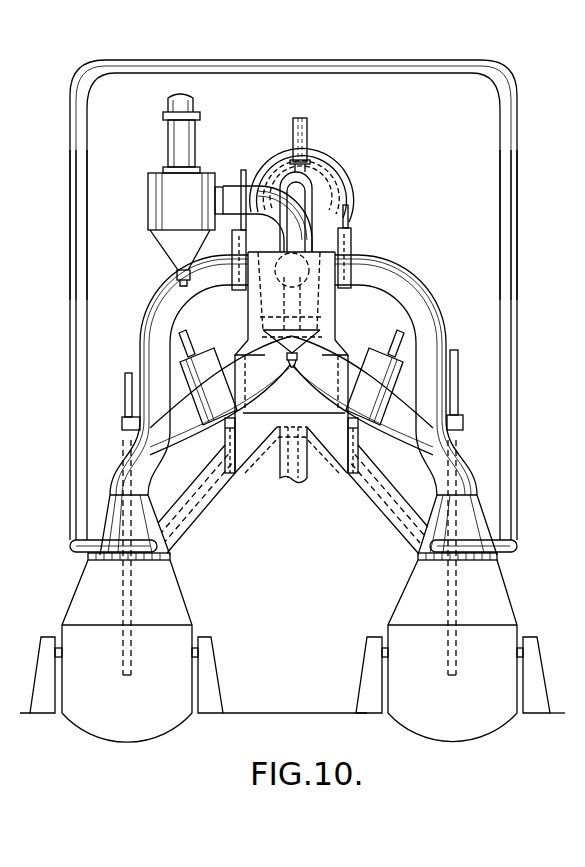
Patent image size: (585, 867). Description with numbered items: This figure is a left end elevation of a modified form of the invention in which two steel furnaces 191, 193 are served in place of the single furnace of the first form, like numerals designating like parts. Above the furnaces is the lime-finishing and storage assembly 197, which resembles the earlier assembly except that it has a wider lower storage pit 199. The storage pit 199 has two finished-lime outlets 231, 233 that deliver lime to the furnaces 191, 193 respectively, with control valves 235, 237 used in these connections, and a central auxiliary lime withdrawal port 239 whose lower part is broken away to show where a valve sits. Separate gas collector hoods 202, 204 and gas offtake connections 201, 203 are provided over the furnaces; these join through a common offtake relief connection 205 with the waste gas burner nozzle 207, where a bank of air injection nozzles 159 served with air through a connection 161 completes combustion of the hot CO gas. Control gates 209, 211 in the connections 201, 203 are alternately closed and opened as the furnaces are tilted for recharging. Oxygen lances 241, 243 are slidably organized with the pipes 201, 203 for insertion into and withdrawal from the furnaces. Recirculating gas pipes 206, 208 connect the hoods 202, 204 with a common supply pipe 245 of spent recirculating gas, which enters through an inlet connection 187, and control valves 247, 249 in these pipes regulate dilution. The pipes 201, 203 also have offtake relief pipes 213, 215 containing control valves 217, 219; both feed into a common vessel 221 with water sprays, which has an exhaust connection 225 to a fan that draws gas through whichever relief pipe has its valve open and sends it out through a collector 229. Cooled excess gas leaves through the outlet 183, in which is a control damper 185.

The air injection nozzles 159 is at (313, 174).
The air connection 161 is at (307, 133).
The outlet of wet dust collector 183 is at (177, 152).
The control damper 185 is at (194, 100).
The inlet connection 187 is at (115, 553).
The furnace 191 is at (140, 699).
The furnace 193 is at (465, 699).
The lime-finishing and storage assembly 197 is at (346, 313).
The lower storage pit 199 is at (305, 409).
The gas offtake connection 201 is at (150, 437).
The gas collector hood 202 is at (113, 523).
The gas offtake connection 203 is at (437, 452).
The gas collector hood 204 is at (490, 520).
The common offtake relief connection 205 is at (349, 226).
The recirculating gas pipe 206 is at (75, 452).
The waste gas burner nozzle 207 is at (314, 192).
The recirculating gas pipe 208 is at (513, 452).
The control gate 209 is at (213, 364).
The control gate 211 is at (372, 364).
The offtake relief pipe 213 is at (158, 319).
The offtake relief pipe 215 is at (404, 283).
The control valve 217 is at (240, 287).
The control valve 219 is at (352, 249).
The common vessel 221 is at (320, 308).
The exhaust connection 225 is at (263, 203).
The collector 229 is at (165, 196).
The finished-lime outlet 231 is at (185, 514).
The finished-lime outlet 233 is at (397, 513).
The control valve 235 is at (240, 476).
The control valve 237 is at (357, 477).
The central auxiliary lime withdrawal port 239 is at (292, 477).
The oxygen lance 241 is at (128, 393).
The oxygen lance 243 is at (458, 360).
The common supply pipe 245 is at (291, 64).
The control valve 247 is at (92, 186).
The control valve 249 is at (495, 213).